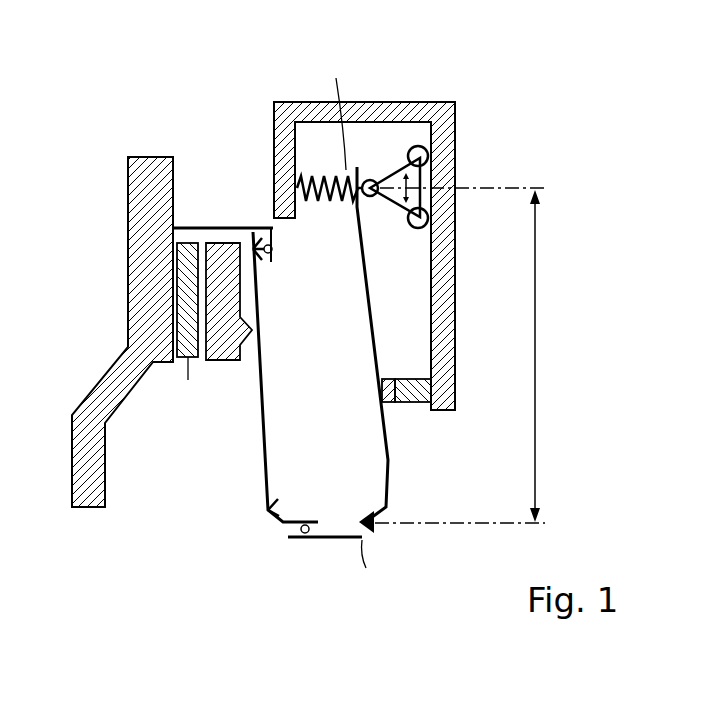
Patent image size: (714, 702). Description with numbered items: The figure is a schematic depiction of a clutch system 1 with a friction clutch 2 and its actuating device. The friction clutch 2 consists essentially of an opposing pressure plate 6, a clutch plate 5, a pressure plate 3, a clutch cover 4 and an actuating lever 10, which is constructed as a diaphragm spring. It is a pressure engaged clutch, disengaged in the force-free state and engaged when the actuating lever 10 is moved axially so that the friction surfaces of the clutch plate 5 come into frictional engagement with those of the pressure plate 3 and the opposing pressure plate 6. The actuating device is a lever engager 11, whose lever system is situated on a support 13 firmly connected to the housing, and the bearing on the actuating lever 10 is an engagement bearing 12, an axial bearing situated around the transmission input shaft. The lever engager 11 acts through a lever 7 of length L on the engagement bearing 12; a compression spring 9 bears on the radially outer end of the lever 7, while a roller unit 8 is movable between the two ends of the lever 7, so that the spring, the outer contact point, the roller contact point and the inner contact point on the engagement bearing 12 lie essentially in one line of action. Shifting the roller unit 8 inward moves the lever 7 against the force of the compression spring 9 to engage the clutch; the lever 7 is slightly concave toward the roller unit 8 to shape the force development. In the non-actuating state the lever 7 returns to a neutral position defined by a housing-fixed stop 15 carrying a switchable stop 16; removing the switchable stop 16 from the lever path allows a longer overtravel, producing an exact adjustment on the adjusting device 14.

The clutch system 1 is at (478, 82).
The friction clutch 2 is at (84, 362).
The pressure plate 3 is at (220, 308).
The clutch cover 4 is at (212, 227).
The clutch plate 5 is at (186, 258).
The opposing pressure plate 6 is at (150, 192).
The lever 7 is at (368, 340).
The roller unit 8 is at (370, 178).
The compression spring 9 is at (312, 178).
The actuating lever 10 is at (262, 425).
The lever engager 11 is at (412, 254).
The engagement bearing 12 is at (305, 535).
The support 13 is at (440, 128).
The adjusting device 14 is at (255, 226).
The stop 15 is at (410, 403).
The switchable stop 16 is at (389, 378).